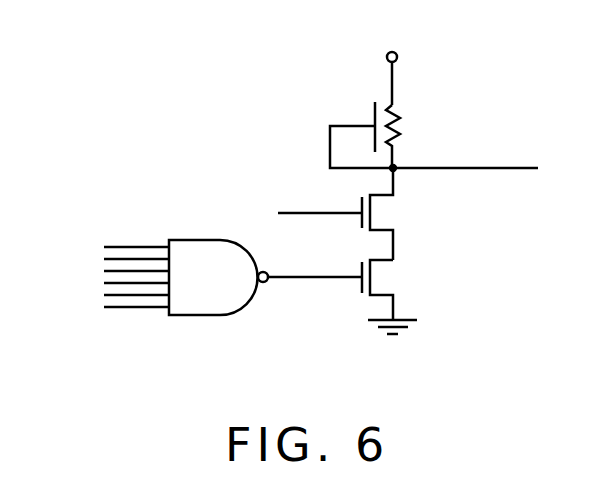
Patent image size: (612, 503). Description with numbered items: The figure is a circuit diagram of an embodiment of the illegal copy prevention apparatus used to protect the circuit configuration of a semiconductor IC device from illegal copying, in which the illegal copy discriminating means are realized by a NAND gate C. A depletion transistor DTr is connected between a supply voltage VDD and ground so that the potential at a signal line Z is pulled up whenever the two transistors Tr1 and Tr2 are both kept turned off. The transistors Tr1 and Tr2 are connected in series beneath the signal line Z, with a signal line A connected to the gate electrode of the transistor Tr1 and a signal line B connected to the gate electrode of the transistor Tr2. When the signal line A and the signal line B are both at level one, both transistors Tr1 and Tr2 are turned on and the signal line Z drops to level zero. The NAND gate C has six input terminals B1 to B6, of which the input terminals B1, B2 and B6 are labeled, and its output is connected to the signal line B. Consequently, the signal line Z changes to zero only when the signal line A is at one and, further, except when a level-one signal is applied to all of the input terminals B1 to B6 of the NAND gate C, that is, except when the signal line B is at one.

The supply voltage VDD is at (398, 57).
The depletion transistor DTr is at (400, 129).
The signal line Z is at (482, 169).
The transistor Tr1 is at (381, 215).
The transistor Tr2 is at (381, 279).
The signal line A is at (309, 214).
The signal line B is at (315, 296).
The NAND gate C is at (218, 277).
The input terminal B1 is at (103, 229).
The input terminal B2 is at (103, 258).
The input terminal B6 is at (54, 275).